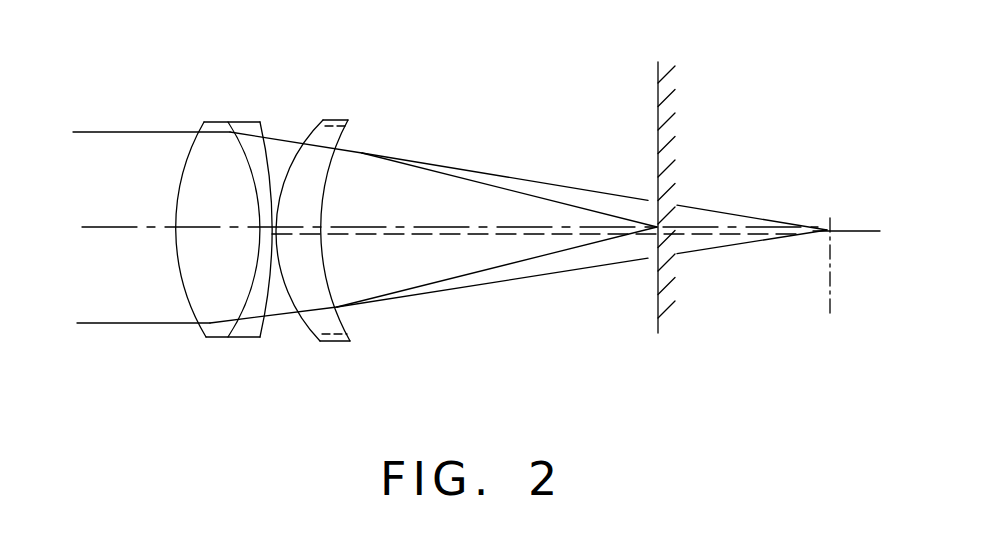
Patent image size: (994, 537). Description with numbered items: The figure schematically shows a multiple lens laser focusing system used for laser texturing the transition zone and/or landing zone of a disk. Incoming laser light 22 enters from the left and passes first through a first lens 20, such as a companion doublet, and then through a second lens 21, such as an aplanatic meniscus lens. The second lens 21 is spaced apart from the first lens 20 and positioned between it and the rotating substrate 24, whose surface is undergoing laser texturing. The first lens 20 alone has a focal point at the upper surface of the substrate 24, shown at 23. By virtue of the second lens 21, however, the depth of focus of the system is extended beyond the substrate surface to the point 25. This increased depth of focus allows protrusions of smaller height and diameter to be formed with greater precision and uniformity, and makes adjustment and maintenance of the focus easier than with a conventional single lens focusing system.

The first lens 20 is at (217, 122).
The second lens 21 is at (337, 120).
The collimated incident light beam 22 is at (112, 132).
The focal point 23 is at (646, 208).
The rotating substrate 24 is at (675, 65).
The extended focus point 25 is at (830, 220).